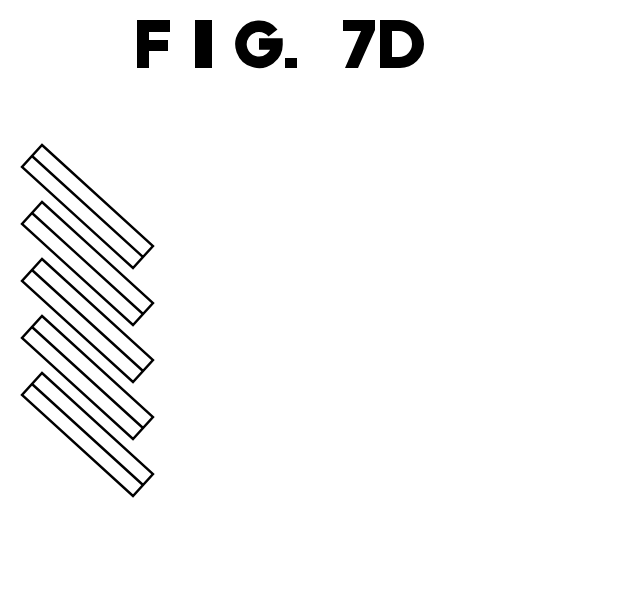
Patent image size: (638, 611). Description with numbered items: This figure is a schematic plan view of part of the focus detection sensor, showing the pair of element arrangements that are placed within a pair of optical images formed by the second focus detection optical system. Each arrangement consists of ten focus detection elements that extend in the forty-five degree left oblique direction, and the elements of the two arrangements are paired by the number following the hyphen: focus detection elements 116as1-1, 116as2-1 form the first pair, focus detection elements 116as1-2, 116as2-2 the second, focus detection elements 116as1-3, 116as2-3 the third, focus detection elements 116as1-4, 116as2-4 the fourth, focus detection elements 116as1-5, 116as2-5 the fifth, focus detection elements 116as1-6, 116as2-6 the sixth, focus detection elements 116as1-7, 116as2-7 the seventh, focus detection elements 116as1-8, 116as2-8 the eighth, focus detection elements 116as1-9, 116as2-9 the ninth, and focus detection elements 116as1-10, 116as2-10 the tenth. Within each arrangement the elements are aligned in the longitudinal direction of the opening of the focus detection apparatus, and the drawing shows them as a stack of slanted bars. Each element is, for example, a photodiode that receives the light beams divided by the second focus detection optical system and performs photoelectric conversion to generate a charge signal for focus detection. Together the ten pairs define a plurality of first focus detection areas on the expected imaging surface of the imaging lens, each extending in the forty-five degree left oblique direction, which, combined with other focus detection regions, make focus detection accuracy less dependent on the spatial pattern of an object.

The focus detection element 116as1-1 is at (281, 193).
The focus detection element 116as2-1 is at (281, 193).
The focus detection element 116as1-2 is at (281, 206).
The focus detection element 116as2-2 is at (125, 221).
The focus detection element 116as1-3 is at (281, 263).
The focus detection element 116as2-3 is at (281, 263).
The focus detection element 116as1-4 is at (281, 263).
The focus detection element 116as2-4 is at (145, 322).
The focus detection element 116as1-5 is at (281, 320).
The focus detection element 116as2-5 is at (281, 320).
The focus detection element 116as1-6 is at (281, 320).
The focus detection element 116as2-6 is at (143, 373).
The focus detection element 116as1-7 is at (281, 391).
The focus detection element 116as2-7 is at (281, 391).
The focus detection element 116as1-8 is at (281, 391).
The focus detection element 116as2-8 is at (145, 433).
The focus detection element 116as1-9 is at (299, 468).
The focus detection element 116as2-9 is at (299, 468).
The focus detection element 116as1-10 is at (299, 468).
The focus detection element 116as2-10 is at (138, 488).